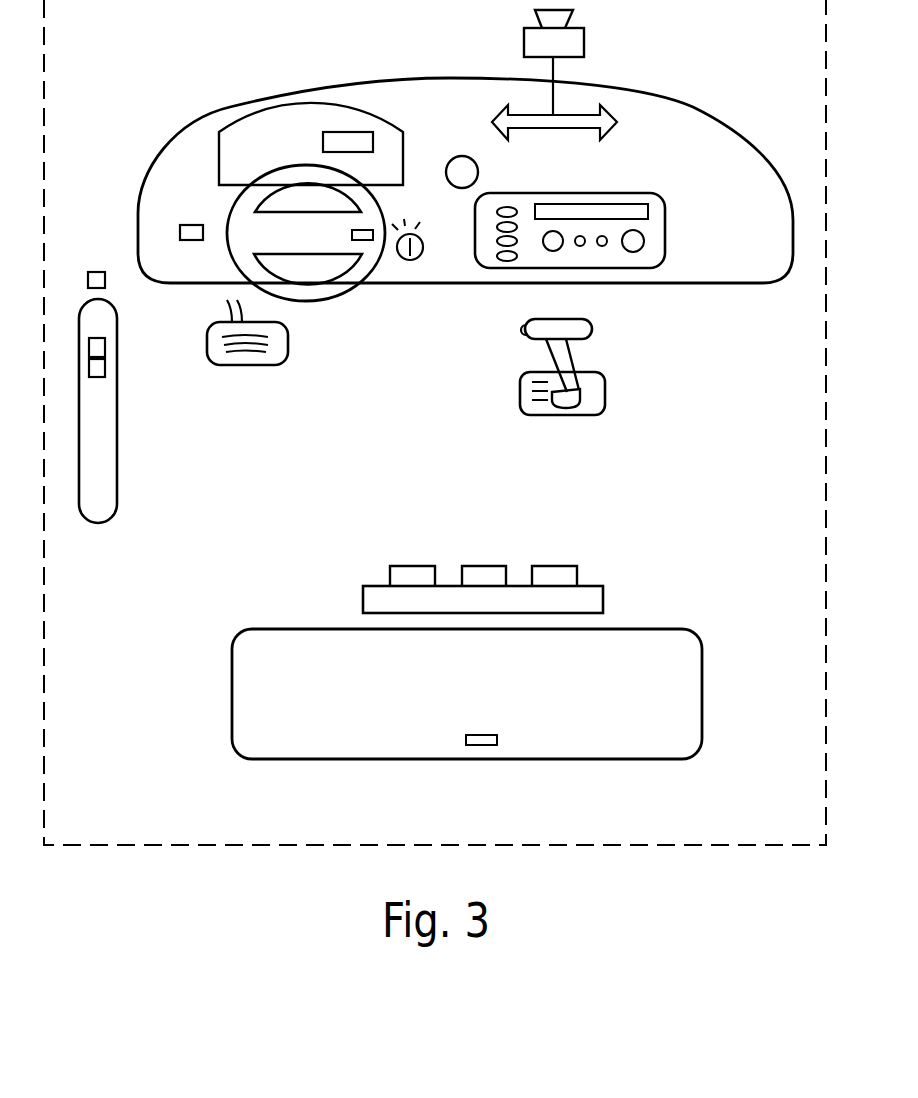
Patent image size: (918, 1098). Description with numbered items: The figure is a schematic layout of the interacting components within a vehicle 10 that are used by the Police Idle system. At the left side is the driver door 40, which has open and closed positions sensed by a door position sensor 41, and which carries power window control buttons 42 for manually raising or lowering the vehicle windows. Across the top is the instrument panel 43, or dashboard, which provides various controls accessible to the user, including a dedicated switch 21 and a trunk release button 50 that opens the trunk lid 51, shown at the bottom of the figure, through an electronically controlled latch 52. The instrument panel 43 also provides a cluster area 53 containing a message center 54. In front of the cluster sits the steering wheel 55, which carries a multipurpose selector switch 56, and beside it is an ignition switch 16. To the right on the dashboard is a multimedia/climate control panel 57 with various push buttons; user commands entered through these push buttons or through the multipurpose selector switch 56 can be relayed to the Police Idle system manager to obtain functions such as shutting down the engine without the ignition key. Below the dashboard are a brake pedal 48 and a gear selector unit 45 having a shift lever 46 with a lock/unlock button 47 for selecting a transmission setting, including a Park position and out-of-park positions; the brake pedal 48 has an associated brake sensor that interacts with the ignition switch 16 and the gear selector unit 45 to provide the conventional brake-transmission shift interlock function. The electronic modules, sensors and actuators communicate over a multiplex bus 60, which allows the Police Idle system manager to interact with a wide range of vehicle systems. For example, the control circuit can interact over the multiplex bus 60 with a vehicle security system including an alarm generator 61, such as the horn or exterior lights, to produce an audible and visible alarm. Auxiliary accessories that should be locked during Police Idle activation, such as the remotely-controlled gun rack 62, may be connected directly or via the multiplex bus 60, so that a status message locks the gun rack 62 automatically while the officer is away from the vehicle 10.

The vehicle 10 is at (826, 440).
The ignition switch 16 is at (415, 260).
The dedicated switch 21 is at (458, 157).
The driver door 40 is at (117, 465).
The door position sensor 41 is at (95, 272).
The power window control buttons 42 is at (105, 368).
The instrument panel 43 is at (702, 99).
The gear selector unit 45 is at (621, 403).
The shift lever 46 is at (592, 329).
The lock/unlock button 47 is at (522, 330).
The brake pedal 48 is at (255, 366).
The trunk release button 50 is at (186, 225).
The trunk lid 51 is at (262, 678).
The electronically controlled latch 52 is at (487, 735).
The cluster area 53 is at (286, 113).
The message center 54 is at (352, 132).
The steering wheel 55 is at (327, 301).
The multipurpose selector switch 56 is at (364, 241).
The multimedia/climate control panel 57 is at (665, 232).
The multiplex bus 60 is at (535, 128).
The alarm generator 61 is at (524, 42).
The gun rack 62 is at (603, 600).